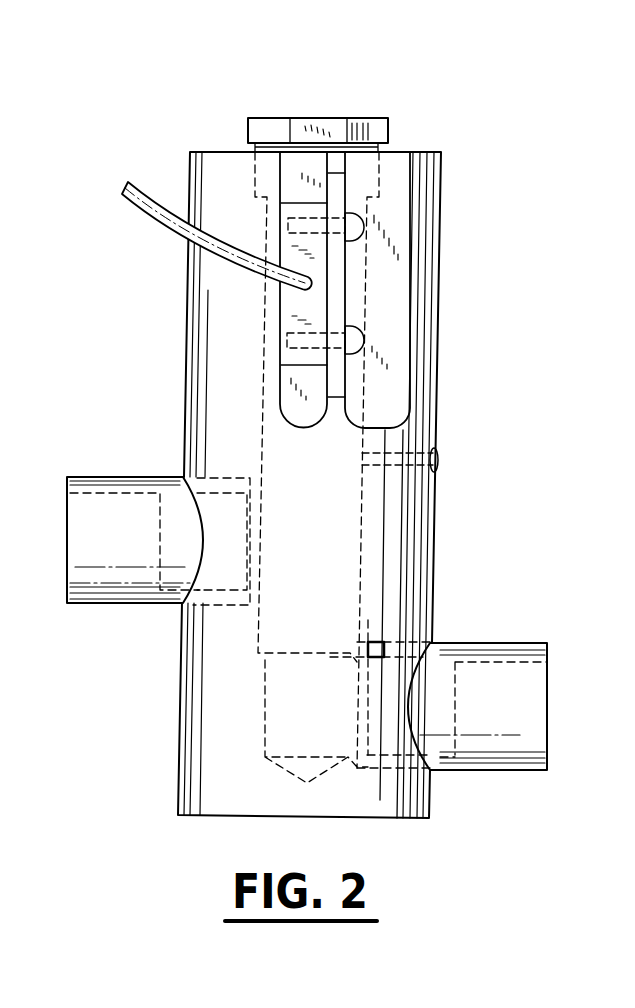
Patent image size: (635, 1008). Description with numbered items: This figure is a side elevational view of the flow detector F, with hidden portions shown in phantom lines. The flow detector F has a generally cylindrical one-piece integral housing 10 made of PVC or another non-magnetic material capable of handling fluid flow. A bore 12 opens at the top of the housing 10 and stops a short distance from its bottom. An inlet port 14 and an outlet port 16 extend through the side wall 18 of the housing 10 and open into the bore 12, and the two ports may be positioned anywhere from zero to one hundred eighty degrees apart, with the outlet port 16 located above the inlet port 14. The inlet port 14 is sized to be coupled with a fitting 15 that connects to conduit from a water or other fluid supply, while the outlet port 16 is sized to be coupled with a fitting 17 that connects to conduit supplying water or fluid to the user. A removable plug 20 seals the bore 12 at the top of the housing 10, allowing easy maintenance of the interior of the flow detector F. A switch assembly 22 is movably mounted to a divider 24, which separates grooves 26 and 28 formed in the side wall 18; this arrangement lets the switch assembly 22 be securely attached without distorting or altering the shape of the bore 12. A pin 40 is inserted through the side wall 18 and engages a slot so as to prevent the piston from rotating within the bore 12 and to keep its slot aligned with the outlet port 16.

The housing 10 is at (454, 223).
The bore 12 is at (348, 548).
The inlet port 14 is at (430, 645).
The fitting 15 is at (509, 786).
The outlet port 16 is at (190, 486).
The fitting 17 is at (88, 460).
The side wall 18 is at (437, 353).
The removable plug 20 is at (366, 118).
The switch assembly 22 is at (263, 319).
The divider 24 is at (337, 297).
The groove 26 is at (290, 152).
The groove 28 is at (406, 151).
The pin 40 is at (440, 462).
The flow detector F is at (540, 140).